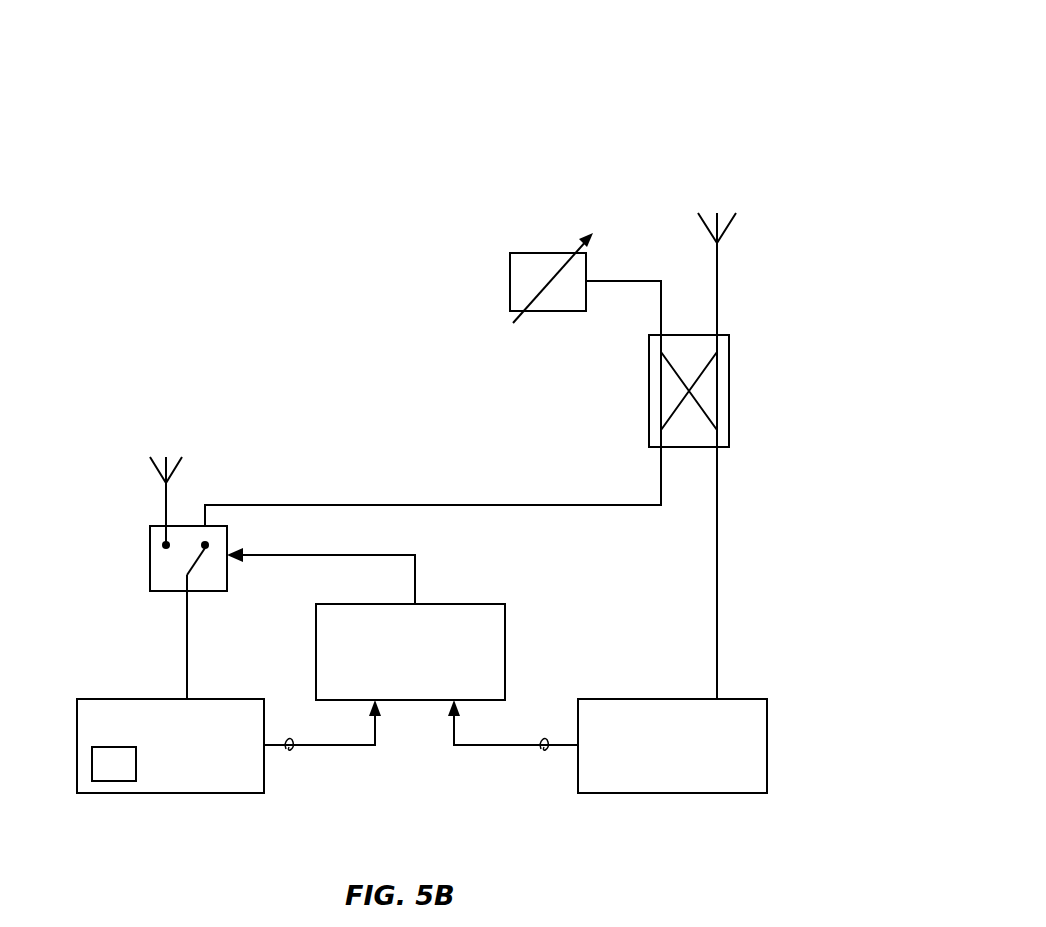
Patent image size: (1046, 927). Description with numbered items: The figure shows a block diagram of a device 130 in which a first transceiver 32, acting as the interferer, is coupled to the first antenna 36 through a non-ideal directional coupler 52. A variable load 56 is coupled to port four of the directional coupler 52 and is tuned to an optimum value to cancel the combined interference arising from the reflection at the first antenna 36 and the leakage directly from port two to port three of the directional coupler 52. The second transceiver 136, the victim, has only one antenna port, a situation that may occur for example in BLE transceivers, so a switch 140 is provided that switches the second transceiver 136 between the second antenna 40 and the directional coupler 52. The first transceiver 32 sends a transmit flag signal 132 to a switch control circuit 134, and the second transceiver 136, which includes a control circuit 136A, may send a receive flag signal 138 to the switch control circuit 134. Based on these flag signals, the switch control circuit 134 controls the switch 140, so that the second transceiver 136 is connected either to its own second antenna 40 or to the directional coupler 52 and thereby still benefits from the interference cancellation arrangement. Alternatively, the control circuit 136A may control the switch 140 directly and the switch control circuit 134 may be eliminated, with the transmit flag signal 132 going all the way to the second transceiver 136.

The device 130 is at (658, 102).
The first antenna 36 is at (728, 227).
The directional coupler 52 is at (731, 364).
The variable load 56 is at (510, 272).
The second antenna 40 is at (152, 470).
The switch 140 is at (150, 565).
The switch control circuit 134 is at (396, 690).
The second transceiver 136 is at (157, 765).
The control circuit 136A is at (113, 781).
The receive flag signal 138 is at (290, 752).
The transmit flag signal 132 is at (546, 752).
The first transceiver 32 is at (662, 767).